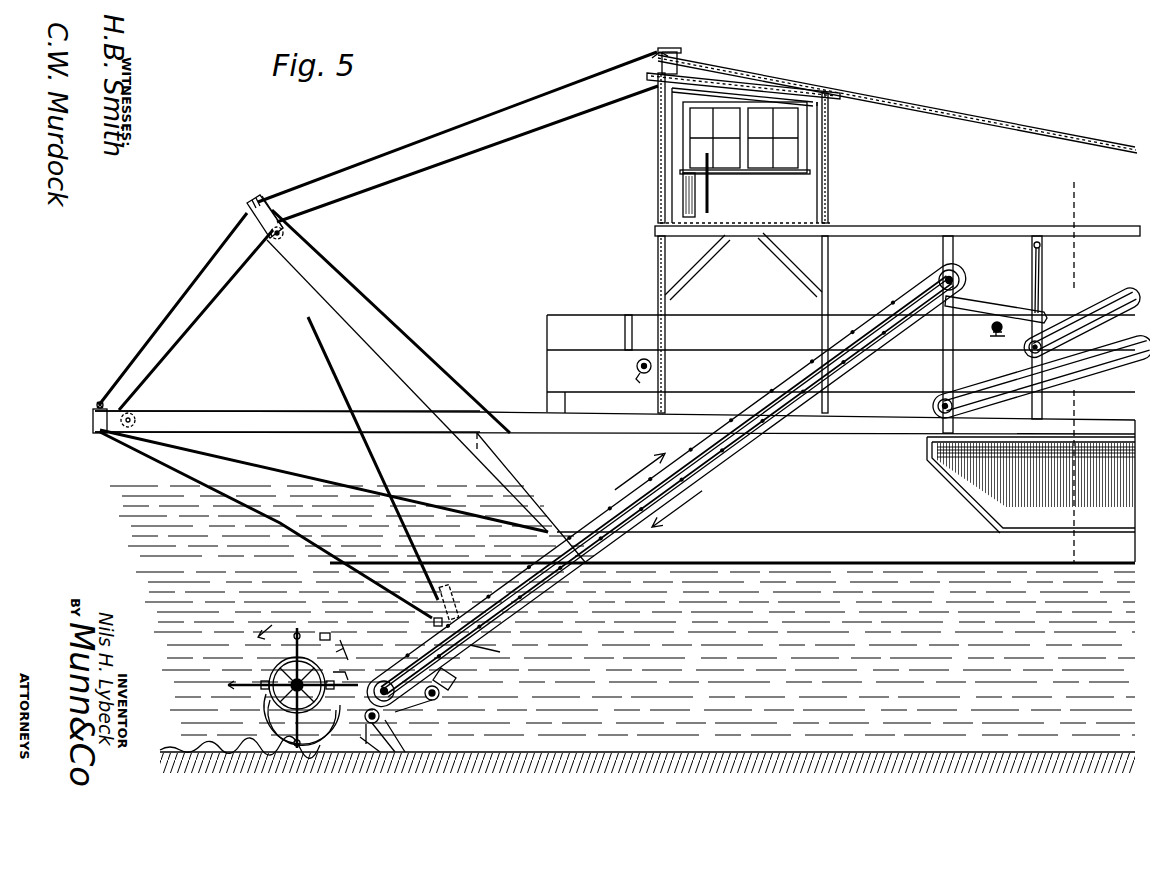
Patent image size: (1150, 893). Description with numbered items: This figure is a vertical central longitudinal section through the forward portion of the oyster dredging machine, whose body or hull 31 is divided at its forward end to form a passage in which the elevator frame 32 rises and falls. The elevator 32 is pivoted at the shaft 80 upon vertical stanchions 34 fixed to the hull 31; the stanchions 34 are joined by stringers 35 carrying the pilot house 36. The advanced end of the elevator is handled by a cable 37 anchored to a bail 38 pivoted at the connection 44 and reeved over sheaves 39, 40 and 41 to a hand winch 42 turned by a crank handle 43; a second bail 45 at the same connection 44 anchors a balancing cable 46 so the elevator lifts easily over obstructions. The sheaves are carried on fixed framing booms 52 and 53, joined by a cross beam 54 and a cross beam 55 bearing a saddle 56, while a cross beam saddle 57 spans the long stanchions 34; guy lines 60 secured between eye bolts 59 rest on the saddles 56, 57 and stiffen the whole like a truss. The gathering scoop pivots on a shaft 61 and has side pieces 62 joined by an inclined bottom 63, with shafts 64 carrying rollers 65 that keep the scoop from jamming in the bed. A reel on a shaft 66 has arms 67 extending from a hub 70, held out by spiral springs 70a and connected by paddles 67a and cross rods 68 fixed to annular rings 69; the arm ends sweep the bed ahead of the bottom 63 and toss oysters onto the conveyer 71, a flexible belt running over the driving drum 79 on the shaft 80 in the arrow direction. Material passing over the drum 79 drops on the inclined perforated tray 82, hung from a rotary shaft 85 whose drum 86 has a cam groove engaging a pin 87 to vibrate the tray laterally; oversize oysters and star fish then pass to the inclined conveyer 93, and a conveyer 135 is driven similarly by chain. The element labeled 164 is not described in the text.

The body or hull 31 is at (497, 455).
The elevator frame 32 is at (585, 590).
The vertical stanchions 34 is at (658, 276).
The stringers 35 is at (885, 227).
The pilot house 36 is at (815, 206).
The cable 37 is at (486, 152).
The bail 38 is at (434, 622).
The sheave 39 is at (135, 418).
The sheave 40 is at (284, 233).
The sheave 41 is at (650, 84).
The winch 42 is at (640, 366).
The crank handle 43 is at (640, 375).
The pivotal connection 44 is at (494, 652).
The second bail 45 is at (452, 596).
The balancing cable 46 is at (410, 542).
The framing booms 52 is at (280, 412).
The framing booms 53 is at (390, 330).
The cross beam 54 is at (93, 418).
The cross beam 55 is at (272, 212).
The saddle 56 is at (250, 206).
The cross beam saddle 57 is at (674, 48).
The eye bolts 59 is at (99, 404).
The guy lines 60 is at (428, 146).
The shaft 61 is at (382, 679).
The side pieces 62 is at (272, 718).
The inclined body portion 63 is at (368, 740).
The shafts 64 is at (440, 696).
The rollers 65 is at (432, 712).
The shaft 66 is at (282, 672).
The arms 67 is at (246, 686).
The paddles 67a is at (308, 636).
The cross rods 68 is at (335, 682).
The annular rings 69 is at (270, 706).
The hub 70 is at (302, 688).
The spiral springs 70a is at (297, 630).
The conveyer 71 is at (900, 300).
The driving drum 79 is at (954, 281).
The shaft 80 is at (955, 276).
The tray 82 is at (982, 312).
The rotary shaft 85 is at (993, 328).
The drum 86 is at (1004, 329).
The pin 87 is at (1033, 312).
The conveyer 93 is at (1118, 305).
The conveyer 135 is at (1094, 370).
The bracket 164 is at (358, 781).